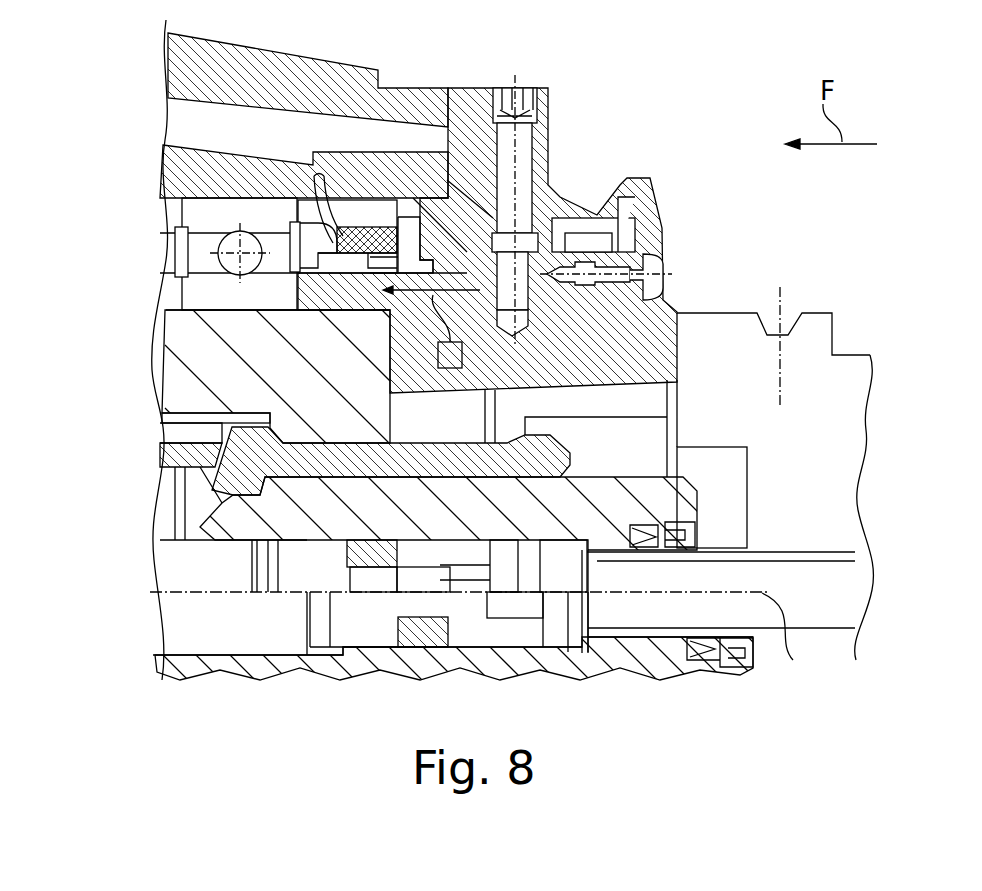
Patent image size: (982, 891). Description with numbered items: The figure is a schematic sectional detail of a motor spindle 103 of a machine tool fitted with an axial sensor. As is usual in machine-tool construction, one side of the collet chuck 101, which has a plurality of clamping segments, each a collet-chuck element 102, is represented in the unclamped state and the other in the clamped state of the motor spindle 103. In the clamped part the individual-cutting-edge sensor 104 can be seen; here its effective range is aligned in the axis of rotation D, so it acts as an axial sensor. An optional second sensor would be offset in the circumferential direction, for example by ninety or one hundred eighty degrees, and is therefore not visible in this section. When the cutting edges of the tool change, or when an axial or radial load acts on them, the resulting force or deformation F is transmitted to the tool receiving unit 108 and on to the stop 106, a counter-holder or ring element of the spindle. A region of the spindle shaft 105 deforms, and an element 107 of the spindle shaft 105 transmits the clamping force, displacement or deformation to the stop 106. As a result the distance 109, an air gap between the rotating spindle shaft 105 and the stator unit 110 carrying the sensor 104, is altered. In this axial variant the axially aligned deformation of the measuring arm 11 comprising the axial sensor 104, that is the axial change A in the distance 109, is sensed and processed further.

The collet chuck 101 is at (590, 452).
The collet-chuck element 102 is at (460, 470).
The motor spindle 103 is at (150, 376).
The sensor 104 is at (360, 210).
The spindle shaft 105 is at (148, 508).
The stop 106 is at (590, 330).
The element 107 is at (180, 323).
The tool receiving unit 108 is at (760, 505).
The distance 109 is at (398, 207).
The stator unit 110 is at (192, 45).
The measuring arm 11 is at (407, 242).